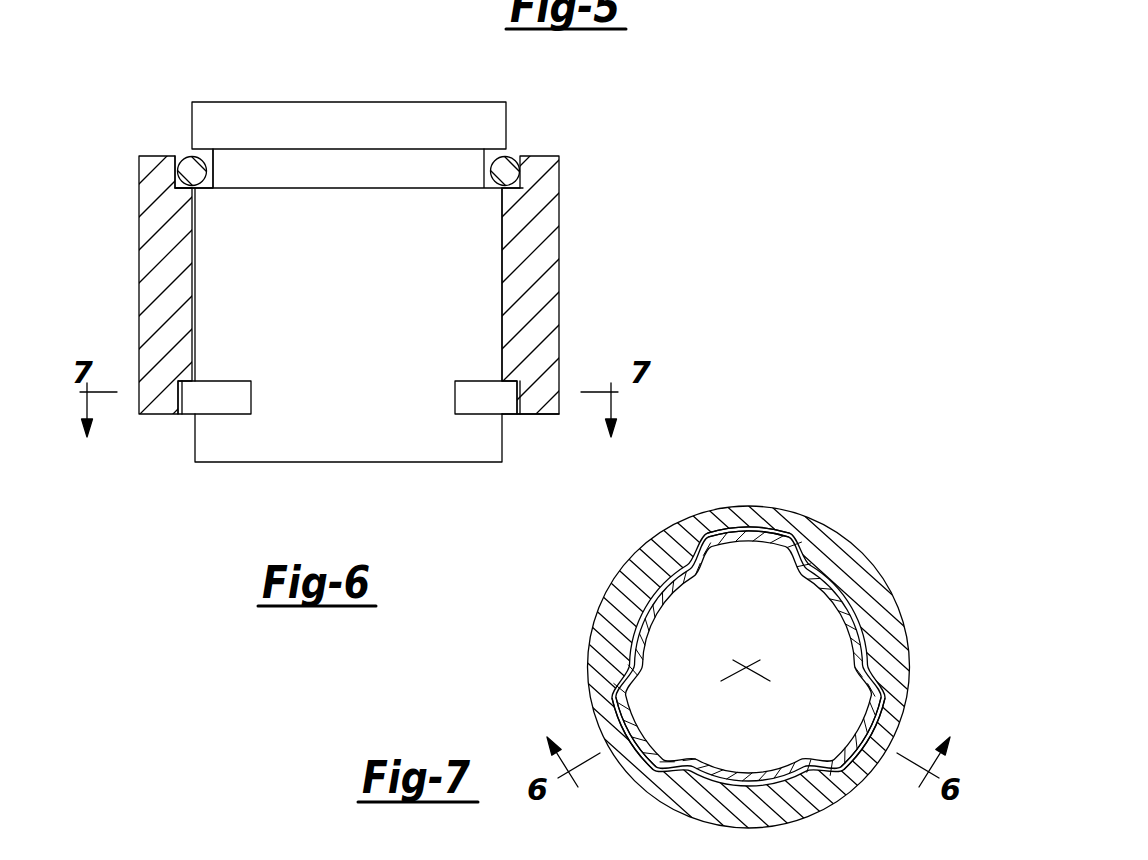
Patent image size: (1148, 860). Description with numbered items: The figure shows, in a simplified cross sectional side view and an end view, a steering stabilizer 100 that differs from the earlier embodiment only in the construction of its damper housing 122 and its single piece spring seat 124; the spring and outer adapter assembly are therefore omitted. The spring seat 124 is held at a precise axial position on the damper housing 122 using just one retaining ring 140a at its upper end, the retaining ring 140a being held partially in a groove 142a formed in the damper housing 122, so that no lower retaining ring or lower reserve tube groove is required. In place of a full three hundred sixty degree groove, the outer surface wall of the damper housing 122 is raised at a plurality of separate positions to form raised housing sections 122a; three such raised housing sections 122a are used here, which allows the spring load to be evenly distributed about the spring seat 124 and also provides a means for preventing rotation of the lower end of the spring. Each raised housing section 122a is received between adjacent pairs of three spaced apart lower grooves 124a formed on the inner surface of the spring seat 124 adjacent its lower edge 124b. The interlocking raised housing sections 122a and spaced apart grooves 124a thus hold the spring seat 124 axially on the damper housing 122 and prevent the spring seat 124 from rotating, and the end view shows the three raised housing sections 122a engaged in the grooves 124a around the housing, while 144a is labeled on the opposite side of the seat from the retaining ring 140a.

In FIG. 6, the steering stabilizer 100 is at (271, 56).
In FIG. 7, the steering stabilizer 100 is at (755, 474).
In FIG. 6, the damper housing 122 is at (349, 76).
In FIG. 7, the damper housing 122 is at (853, 496).
In FIG. 6, the raised housing sections 122a is at (226, 392).
In FIG. 7, the raised housing sections 122a is at (778, 535).
In FIG. 6, the spring seat 124 is at (132, 178).
In FIG. 7, the spring seat 124 is at (902, 588).
In FIG. 6, the lower grooves 124a is at (519, 401).
In FIG. 7, the lower grooves 124a is at (733, 528).
In FIG. 6, the lower edge 124b is at (537, 420).
In FIG. 6, the retaining ring 140a is at (184, 162).
In FIG. 6, the groove 142a is at (201, 162).
In FIG. 6, the right O-ring seal 144a is at (512, 152).